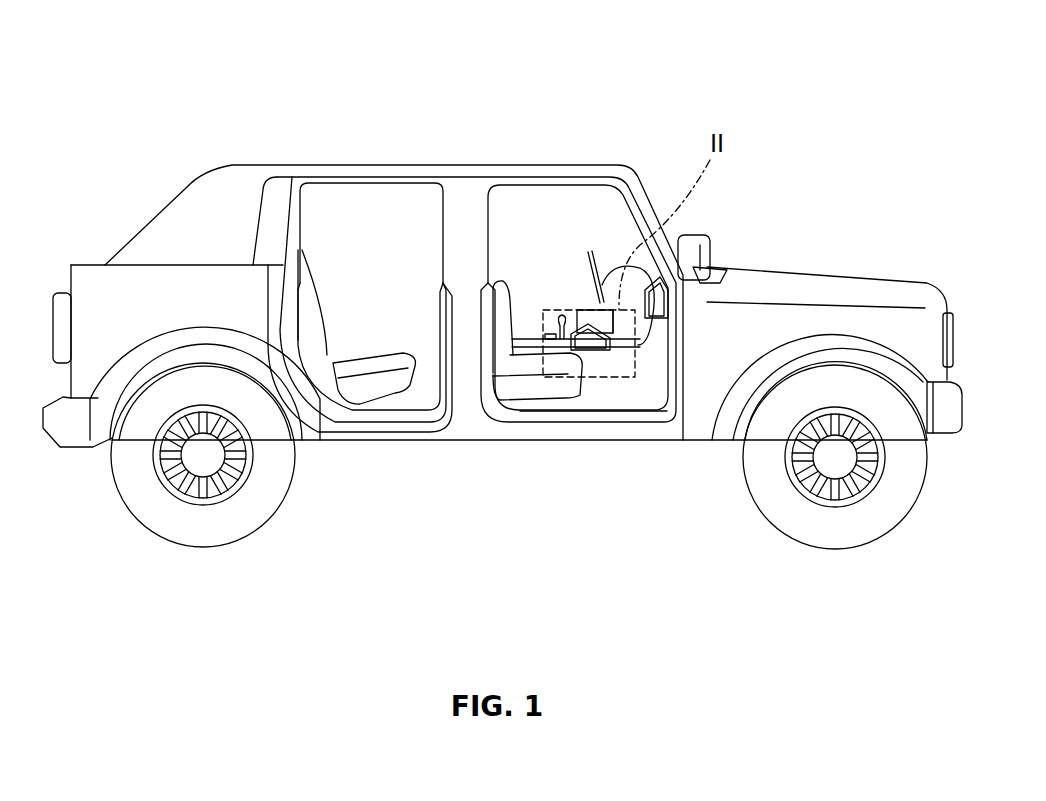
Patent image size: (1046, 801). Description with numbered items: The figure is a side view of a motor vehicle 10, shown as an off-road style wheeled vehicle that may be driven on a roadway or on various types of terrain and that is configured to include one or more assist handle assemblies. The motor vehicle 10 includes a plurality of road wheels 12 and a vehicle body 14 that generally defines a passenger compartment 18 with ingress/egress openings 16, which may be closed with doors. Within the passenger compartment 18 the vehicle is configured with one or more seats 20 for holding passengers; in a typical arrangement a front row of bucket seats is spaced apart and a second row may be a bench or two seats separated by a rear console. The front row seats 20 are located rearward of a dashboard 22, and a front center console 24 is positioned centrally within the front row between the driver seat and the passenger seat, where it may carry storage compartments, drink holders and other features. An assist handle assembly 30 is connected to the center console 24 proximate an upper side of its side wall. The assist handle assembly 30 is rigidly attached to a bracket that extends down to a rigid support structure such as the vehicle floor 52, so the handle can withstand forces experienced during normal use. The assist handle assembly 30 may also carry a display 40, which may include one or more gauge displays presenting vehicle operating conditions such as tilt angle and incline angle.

The motor vehicle 10 is at (622, 147).
The road wheels 12 is at (140, 490).
The vehicle body 14 is at (481, 414).
The ingress/egress openings 16 is at (497, 193).
The passenger compartment 18 is at (528, 205).
The seats 20 is at (541, 388).
The dashboard 22 is at (622, 203).
The front center console 24 is at (528, 318).
The assist handle assembly 30 is at (575, 297).
The display 40 is at (622, 312).
The vehicle floor 52 is at (618, 397).